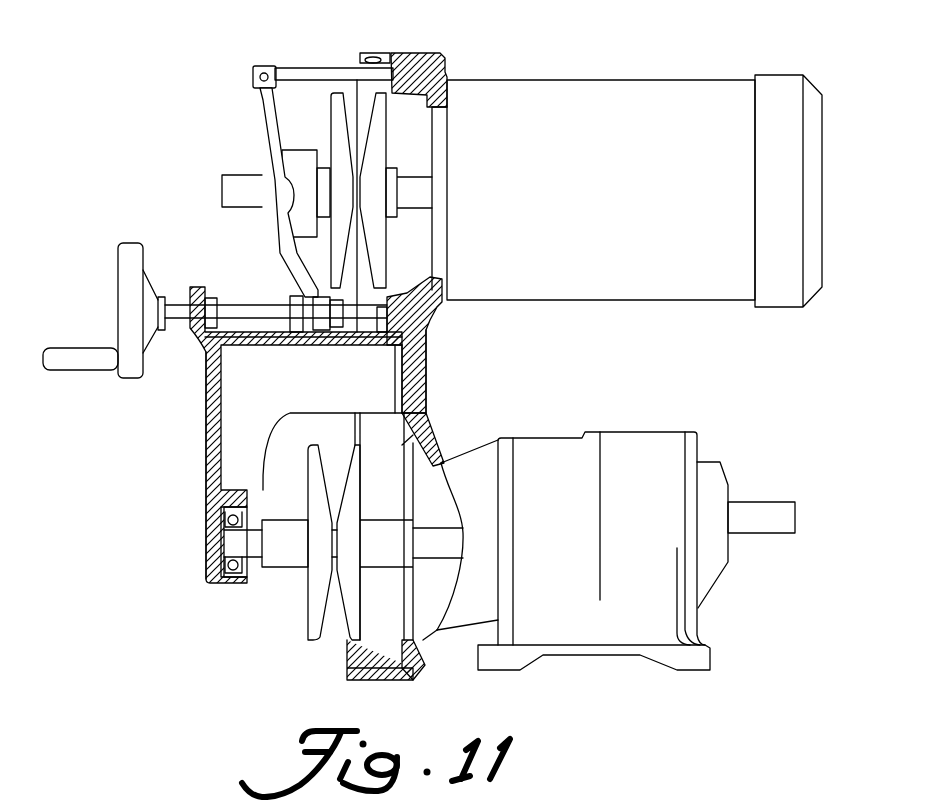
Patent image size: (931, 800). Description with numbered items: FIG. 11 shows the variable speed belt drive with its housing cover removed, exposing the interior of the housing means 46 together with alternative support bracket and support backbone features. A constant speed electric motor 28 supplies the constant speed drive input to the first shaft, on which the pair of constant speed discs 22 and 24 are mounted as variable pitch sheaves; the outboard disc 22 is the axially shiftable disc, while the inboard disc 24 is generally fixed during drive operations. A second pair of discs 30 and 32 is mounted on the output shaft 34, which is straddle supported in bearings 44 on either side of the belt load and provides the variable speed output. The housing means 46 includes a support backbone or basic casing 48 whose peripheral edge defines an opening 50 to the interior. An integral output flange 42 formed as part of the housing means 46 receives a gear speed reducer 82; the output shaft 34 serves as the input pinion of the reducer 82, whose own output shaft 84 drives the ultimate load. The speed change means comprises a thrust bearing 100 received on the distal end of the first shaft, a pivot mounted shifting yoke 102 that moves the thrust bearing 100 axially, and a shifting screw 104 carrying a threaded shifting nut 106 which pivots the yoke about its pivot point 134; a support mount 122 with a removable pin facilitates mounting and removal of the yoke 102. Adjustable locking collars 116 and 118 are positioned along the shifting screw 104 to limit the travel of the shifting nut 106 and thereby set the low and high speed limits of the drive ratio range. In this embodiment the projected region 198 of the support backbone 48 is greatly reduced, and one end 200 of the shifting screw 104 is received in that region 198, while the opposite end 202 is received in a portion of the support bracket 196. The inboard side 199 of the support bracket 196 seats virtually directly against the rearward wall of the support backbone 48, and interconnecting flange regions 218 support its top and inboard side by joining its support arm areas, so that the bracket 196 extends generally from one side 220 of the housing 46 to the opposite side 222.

The constant speed disc 22 is at (333, 90).
The constant speed disc 24 is at (413, 40).
The constant speed electric motor 28 is at (628, 207).
The disc 30 is at (305, 648).
The disc 32 is at (348, 665).
The output shaft 34 is at (248, 578).
The output flange 42 is at (461, 463).
The bearing 44 is at (242, 583).
The housing means 46 is at (455, 70).
The support backbone 48 is at (443, 316).
The opening 50 is at (370, 53).
The gear speed reducer 82 is at (660, 542).
The output shaft 84 is at (761, 525).
The thrust bearing 100 is at (324, 120).
The shifting yoke 102 is at (258, 128).
The shifting screw 104 is at (232, 304).
The shifting nut 106 is at (300, 333).
The adjustable collar 116 is at (213, 297).
The adjustable collar 118 is at (337, 331).
The support mount 122 is at (335, 67).
The pivot point 134 is at (261, 65).
The support bracket 196 is at (198, 449).
The enlarged region 198 is at (415, 265).
The inboard side 199 is at (393, 383).
The end of shifting screw 200 is at (383, 340).
The opposite end of shifting screw 202 is at (205, 297).
The interconnecting flange regions 218 is at (305, 450).
The side of housing 220 is at (426, 380).
The opposite side of housing 222 is at (200, 390).